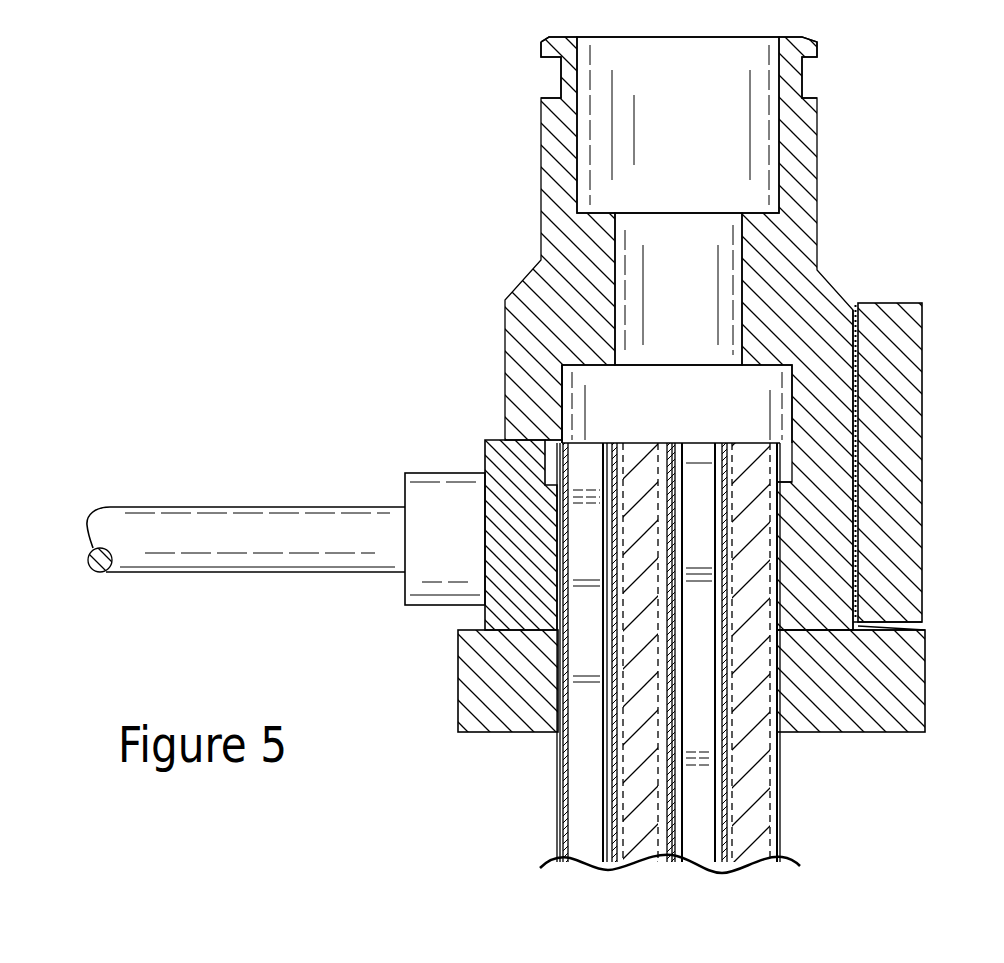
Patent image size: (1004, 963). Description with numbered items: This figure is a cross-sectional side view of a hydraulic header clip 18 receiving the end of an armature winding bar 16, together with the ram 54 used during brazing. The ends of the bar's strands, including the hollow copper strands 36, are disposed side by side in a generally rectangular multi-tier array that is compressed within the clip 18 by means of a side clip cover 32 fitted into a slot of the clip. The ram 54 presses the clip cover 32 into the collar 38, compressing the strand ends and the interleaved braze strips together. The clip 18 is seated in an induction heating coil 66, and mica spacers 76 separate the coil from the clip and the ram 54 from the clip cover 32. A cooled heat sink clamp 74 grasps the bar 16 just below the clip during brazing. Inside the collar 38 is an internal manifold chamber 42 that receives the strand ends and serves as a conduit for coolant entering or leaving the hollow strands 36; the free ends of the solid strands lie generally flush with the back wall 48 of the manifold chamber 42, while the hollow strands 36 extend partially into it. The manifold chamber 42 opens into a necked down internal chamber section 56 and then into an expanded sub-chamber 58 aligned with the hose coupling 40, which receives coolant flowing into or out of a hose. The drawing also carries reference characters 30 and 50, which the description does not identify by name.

The armature winding bar 16 is at (672, 885).
The hydraulic header clip 18 is at (838, 285).
The flow channel 30 is at (606, 560).
The clip cover 32 is at (522, 547).
The hollow copper strands 36 is at (593, 452).
The collar 38 is at (826, 386).
The hose coupling 40 is at (810, 127).
The manifold chamber 42 is at (610, 374).
The back wall 48 is at (786, 467).
The seal 50 is at (778, 595).
The ram 54 is at (145, 580).
The necked down internal chamber section 56 is at (672, 286).
The expanded sub-chamber 58 is at (677, 114).
The induction heating coil 66 is at (905, 553).
The cooled heat sink clamp 74 is at (500, 734).
The mica spacers 76 is at (855, 622).